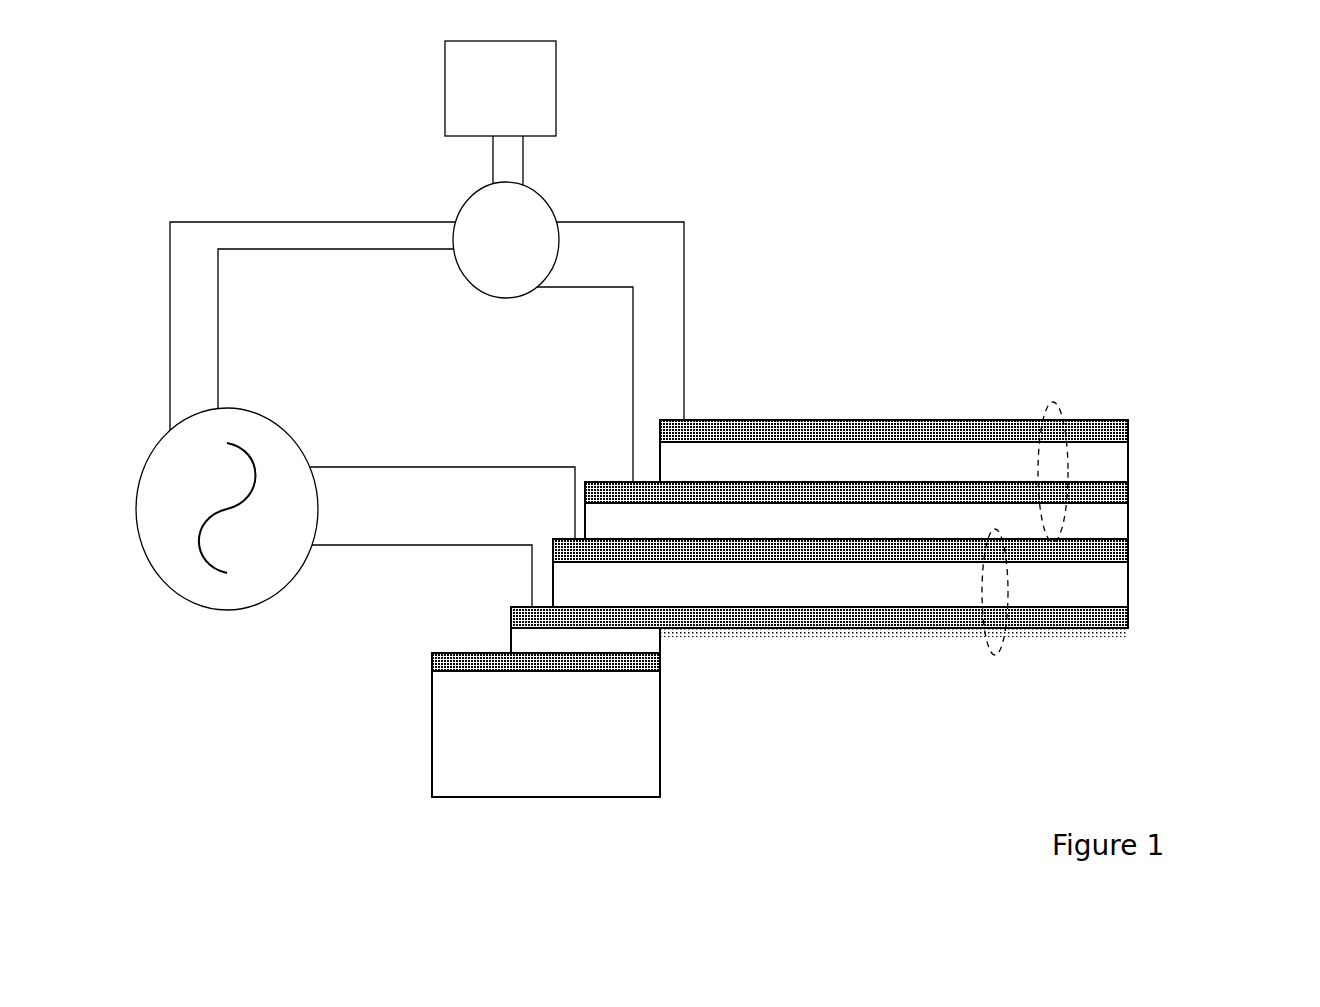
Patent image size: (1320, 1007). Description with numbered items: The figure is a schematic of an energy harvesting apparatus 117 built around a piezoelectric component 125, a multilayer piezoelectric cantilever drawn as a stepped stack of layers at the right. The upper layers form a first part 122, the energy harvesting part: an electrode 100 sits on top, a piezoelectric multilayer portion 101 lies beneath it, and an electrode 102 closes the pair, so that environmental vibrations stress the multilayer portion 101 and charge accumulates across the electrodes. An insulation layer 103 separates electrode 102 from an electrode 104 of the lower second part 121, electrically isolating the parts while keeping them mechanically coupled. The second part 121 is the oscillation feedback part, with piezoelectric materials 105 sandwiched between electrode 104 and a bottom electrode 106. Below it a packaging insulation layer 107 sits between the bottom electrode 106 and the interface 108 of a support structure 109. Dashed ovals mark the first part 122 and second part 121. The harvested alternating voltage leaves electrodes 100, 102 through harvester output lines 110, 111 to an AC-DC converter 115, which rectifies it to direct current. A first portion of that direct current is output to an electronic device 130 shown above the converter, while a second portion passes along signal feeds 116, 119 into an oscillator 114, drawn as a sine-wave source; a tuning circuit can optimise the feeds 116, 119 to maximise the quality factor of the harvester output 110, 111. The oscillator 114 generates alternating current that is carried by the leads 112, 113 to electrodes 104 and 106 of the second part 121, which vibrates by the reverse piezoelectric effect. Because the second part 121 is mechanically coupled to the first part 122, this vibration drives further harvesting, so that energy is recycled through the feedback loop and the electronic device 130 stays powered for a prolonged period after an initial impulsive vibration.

The electrode 100 is at (942, 414).
The multilayer portion 101 is at (1120, 457).
The electrode 102 is at (1120, 488).
The insulation layer 103 is at (1120, 512).
The electrode 104 is at (1120, 546).
The piezoelectric materials 105 is at (1120, 585).
The bottom electrode 106 is at (1120, 616).
The packaging insulation layer 107 is at (648, 639).
The interface 108 is at (650, 665).
The support structure 109 is at (650, 730).
The harvester output 110 is at (690, 285).
The harvester output 111 is at (619, 405).
The AC lead to third electrode 112 is at (400, 463).
The AC lead to fourth electrode 113 is at (380, 541).
The oscillator 114 is at (258, 430).
The AC-DC converter 115 is at (462, 293).
The signal feed 116 is at (272, 246).
The apparatus 117 is at (878, 385).
The signal feed 119 is at (212, 217).
The second part 121 is at (990, 665).
The first part 122 is at (1058, 392).
The piezoelectric component 125 is at (911, 511).
The electronic device 130 is at (562, 97).